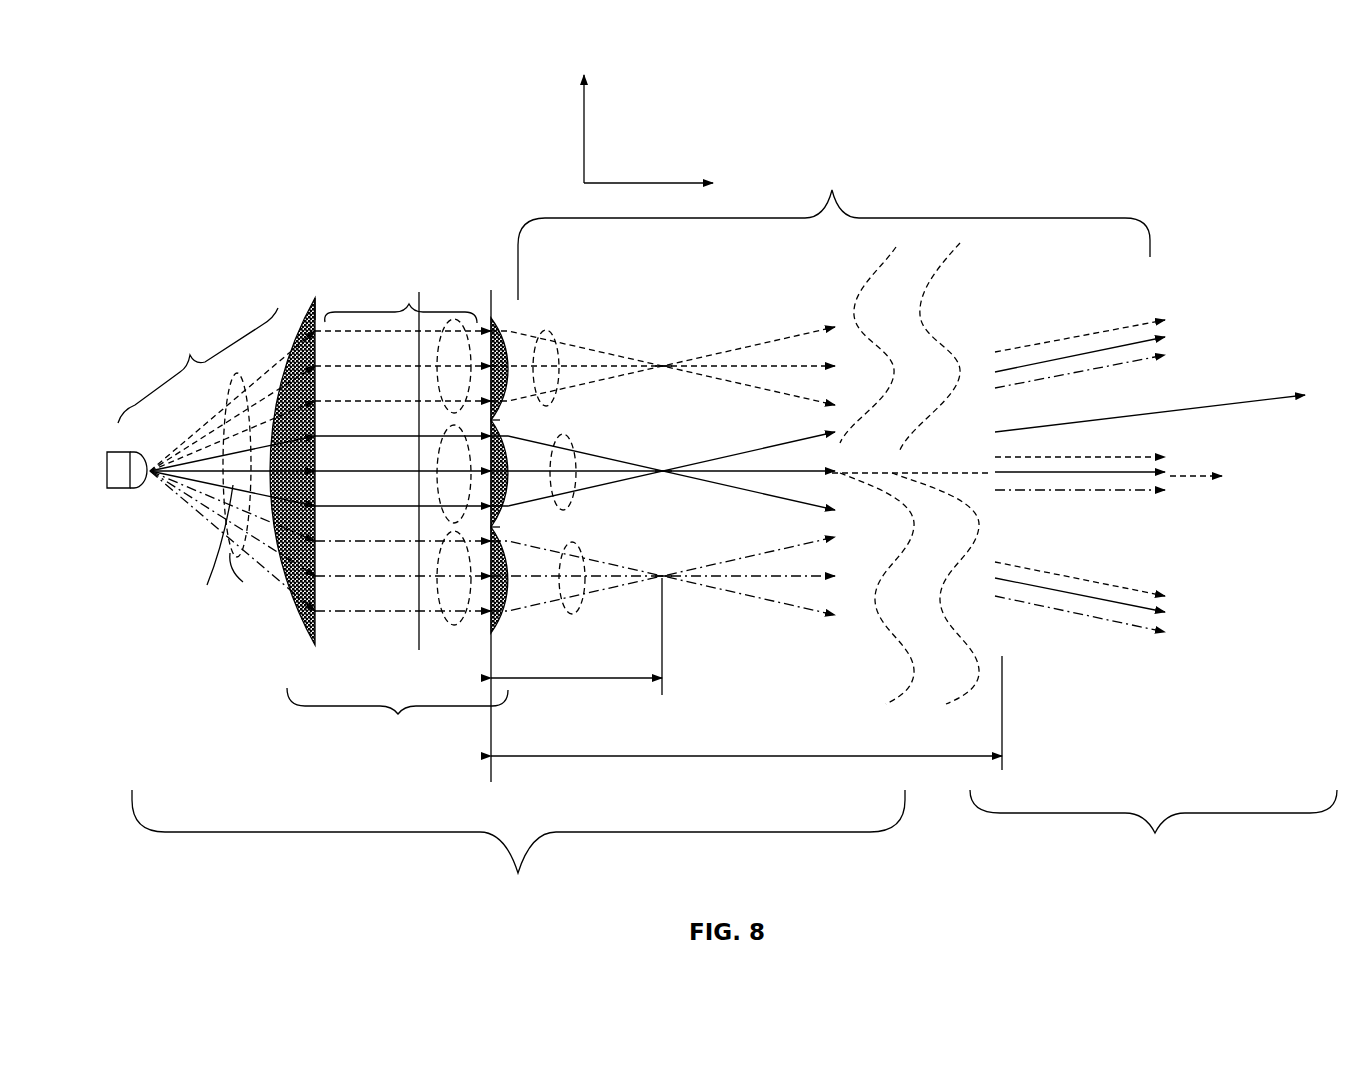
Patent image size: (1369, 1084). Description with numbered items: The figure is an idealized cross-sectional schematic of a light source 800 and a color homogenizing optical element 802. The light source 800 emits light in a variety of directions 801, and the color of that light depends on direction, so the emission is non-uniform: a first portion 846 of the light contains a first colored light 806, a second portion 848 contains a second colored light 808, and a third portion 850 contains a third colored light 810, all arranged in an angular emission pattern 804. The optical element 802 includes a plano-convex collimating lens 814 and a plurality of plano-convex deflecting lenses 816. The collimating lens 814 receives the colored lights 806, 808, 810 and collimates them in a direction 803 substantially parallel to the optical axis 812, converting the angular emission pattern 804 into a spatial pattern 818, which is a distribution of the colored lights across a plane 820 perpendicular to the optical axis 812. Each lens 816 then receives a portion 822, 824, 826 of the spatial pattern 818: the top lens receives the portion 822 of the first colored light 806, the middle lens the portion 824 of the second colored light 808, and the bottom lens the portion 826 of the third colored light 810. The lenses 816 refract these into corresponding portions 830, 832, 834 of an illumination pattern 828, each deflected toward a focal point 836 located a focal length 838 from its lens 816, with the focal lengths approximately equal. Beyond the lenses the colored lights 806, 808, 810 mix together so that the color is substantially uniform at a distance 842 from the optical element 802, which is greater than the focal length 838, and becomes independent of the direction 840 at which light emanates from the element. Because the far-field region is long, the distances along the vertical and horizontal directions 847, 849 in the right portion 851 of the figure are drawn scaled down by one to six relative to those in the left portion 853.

The light source 800 is at (118, 485).
The directions 801 is at (286, 296).
The color homogenizing optical element 802 is at (397, 714).
The direction 803 is at (333, 400).
The angular emission pattern 804 is at (190, 353).
The first colored light 806 is at (200, 442).
The second colored light 808 is at (215, 490).
The third colored light 810 is at (225, 495).
The optical axis 812 is at (1222, 500).
The collimating lens 814 is at (323, 318).
The deflecting lenses 816 is at (508, 322).
The spatial pattern 818 is at (409, 300).
The plane 820 is at (420, 652).
The portion of first colored light 822 is at (475, 305).
The portion of second colored light 824 is at (495, 420).
The portion of third colored light 826 is at (495, 526).
The illumination pattern 828 is at (834, 229).
The portion of illumination pattern 830 is at (565, 330).
The portion of illumination pattern 832 is at (572, 462).
The portion of illumination pattern 834 is at (574, 605).
The focal point 836 is at (666, 365).
The focal length 838 is at (588, 680).
The direction 840 is at (1262, 398).
The distance 842 is at (742, 760).
The first portion 846 is at (238, 385).
The vertical direction 847 is at (588, 97).
The second portion 848 is at (200, 549).
The horizontal direction 849 is at (686, 180).
The third portion 850 is at (245, 580).
The right portion 851 is at (1153, 830).
The left portion 853 is at (518, 850).